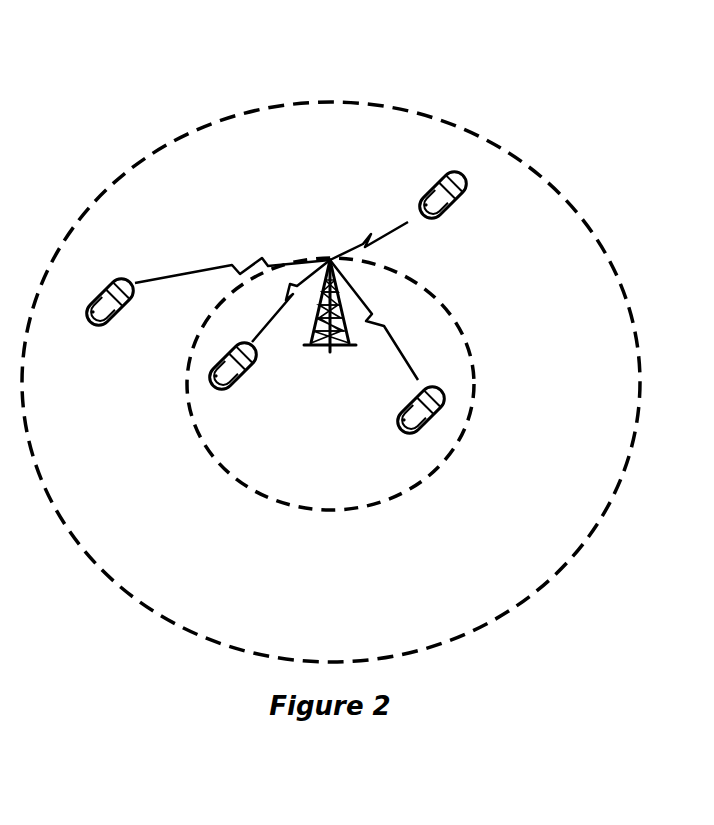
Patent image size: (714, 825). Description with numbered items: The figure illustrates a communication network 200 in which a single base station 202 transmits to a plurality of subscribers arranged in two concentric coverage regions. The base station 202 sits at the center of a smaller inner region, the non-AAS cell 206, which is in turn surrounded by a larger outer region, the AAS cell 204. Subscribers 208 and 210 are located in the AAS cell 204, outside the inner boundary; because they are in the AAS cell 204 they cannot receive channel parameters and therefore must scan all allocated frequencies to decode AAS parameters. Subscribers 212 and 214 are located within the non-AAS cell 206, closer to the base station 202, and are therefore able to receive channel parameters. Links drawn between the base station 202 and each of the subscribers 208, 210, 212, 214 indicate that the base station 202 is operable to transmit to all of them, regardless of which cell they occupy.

The communication network 200 is at (544, 73).
The base station 202 is at (330, 327).
The AAS cell 204 is at (331, 382).
The non-AAS cell 206 is at (330, 384).
The subscriber 208 is at (113, 325).
The subscriber 210 is at (445, 222).
The subscriber 212 is at (240, 388).
The subscriber 214 is at (398, 414).